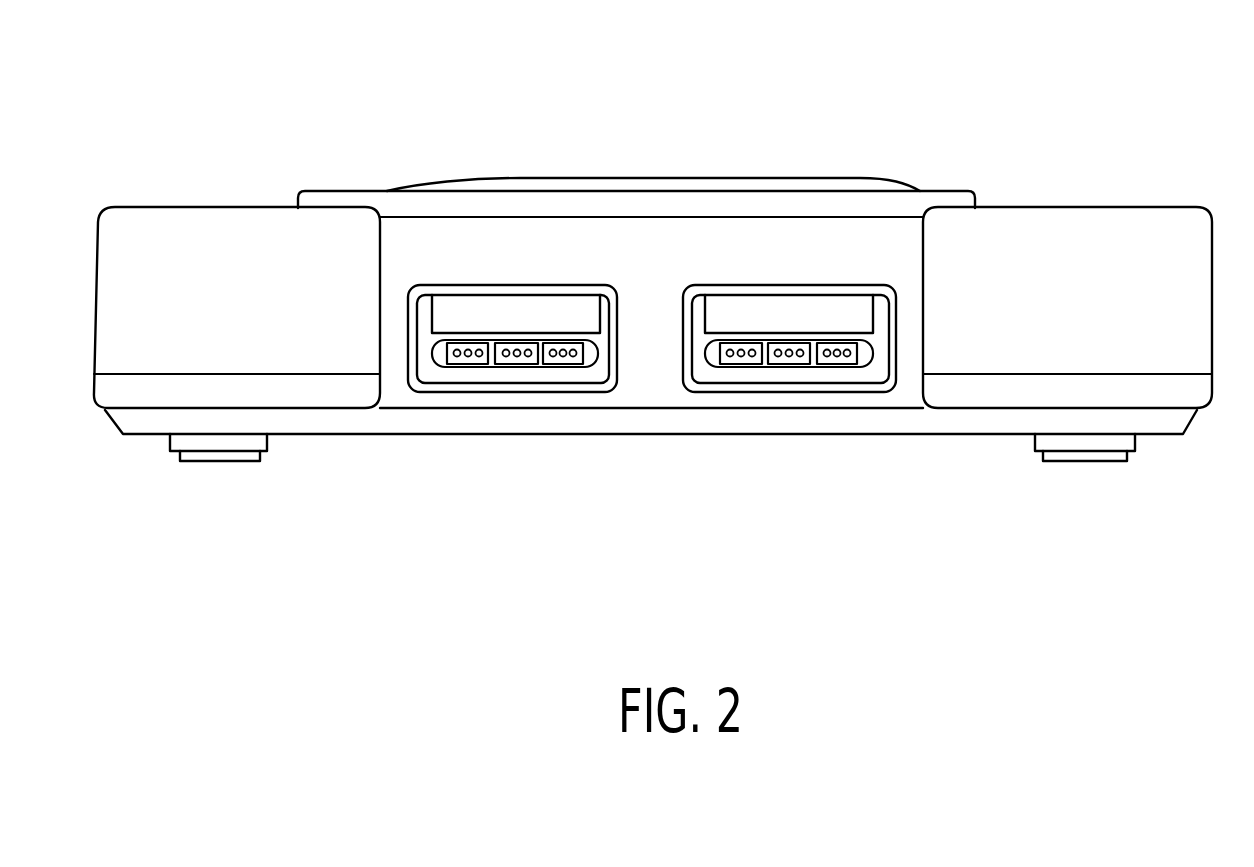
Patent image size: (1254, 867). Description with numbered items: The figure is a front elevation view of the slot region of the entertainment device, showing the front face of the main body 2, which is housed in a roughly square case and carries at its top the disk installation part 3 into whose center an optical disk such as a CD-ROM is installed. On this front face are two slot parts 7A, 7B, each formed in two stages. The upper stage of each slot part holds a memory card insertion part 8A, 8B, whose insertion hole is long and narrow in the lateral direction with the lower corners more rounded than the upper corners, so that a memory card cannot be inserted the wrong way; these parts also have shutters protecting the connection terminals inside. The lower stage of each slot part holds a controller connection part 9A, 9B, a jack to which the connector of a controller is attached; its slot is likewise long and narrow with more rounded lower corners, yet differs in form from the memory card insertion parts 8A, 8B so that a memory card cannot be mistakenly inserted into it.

The main body 2 is at (953, 159).
The disk installation part 3 is at (666, 185).
The slot part 7A is at (473, 392).
The slot part 7B is at (757, 392).
The memory card insertion part 8A is at (498, 308).
The memory card insertion part 8B is at (792, 313).
The controller connection part 9A is at (525, 367).
The controller connection part 9B is at (795, 367).